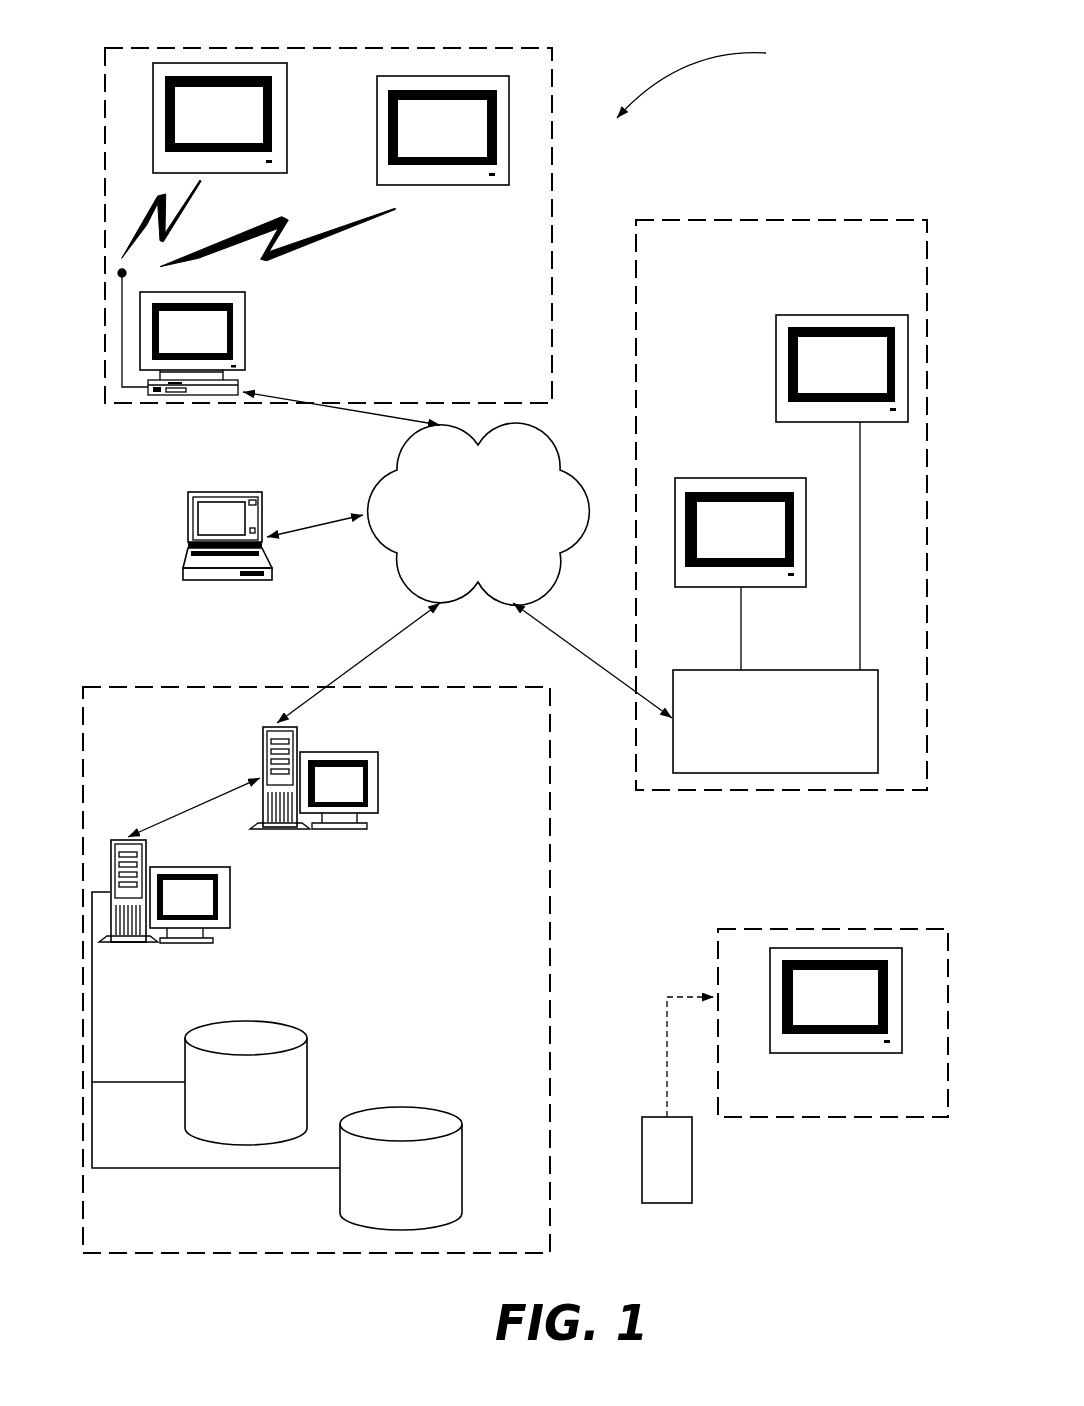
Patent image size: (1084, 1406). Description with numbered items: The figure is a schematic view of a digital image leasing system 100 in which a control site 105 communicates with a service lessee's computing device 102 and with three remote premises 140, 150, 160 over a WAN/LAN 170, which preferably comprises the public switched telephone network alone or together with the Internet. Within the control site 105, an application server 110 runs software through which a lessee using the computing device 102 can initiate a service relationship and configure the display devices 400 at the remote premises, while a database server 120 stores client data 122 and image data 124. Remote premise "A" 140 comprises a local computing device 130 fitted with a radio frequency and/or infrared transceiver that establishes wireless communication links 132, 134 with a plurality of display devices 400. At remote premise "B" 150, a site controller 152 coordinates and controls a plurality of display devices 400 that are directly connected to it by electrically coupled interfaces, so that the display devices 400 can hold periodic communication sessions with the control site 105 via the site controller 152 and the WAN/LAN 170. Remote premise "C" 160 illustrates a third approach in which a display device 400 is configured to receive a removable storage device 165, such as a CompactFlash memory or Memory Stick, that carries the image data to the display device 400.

The digital image leasing system 100 is at (718, 81).
The computing device 102 is at (262, 497).
The control site 105 is at (243, 1255).
The application server 110 is at (337, 752).
The database server 120 is at (187, 867).
The client data 122 is at (275, 1033).
The image data 124 is at (433, 1118).
The local computing device 130 is at (195, 393).
The wireless communication link 132 is at (142, 238).
The wireless communication link 134 is at (302, 248).
The remote premise "A" 140 is at (468, 47).
The remote premise "B" 150 is at (847, 790).
The site controller 152 is at (753, 775).
The remote premise "C" 160 is at (845, 1117).
The removable storage device 165 is at (642, 1135).
The WAN/LAN 170 is at (550, 445).
The display device 400 is at (245, 162).